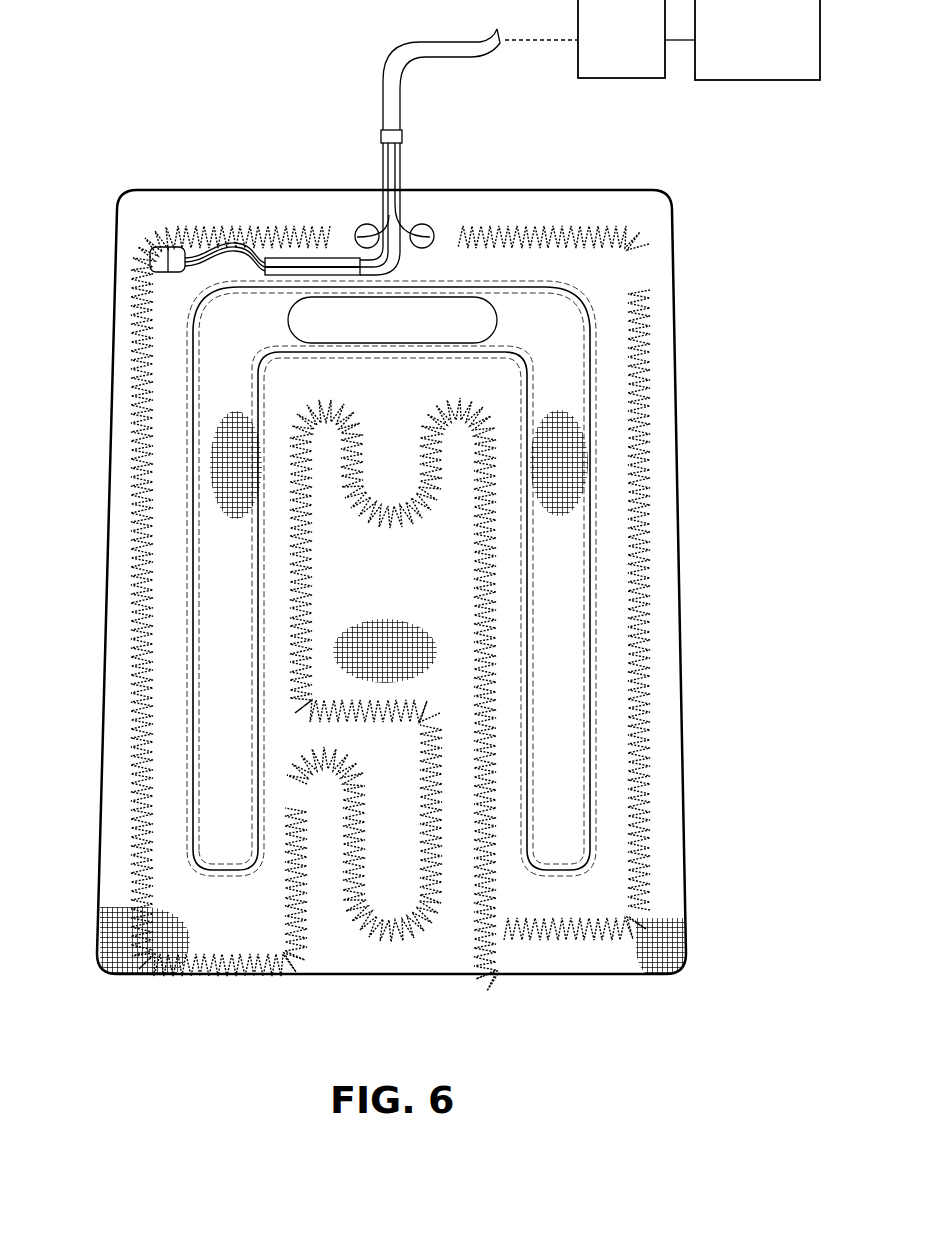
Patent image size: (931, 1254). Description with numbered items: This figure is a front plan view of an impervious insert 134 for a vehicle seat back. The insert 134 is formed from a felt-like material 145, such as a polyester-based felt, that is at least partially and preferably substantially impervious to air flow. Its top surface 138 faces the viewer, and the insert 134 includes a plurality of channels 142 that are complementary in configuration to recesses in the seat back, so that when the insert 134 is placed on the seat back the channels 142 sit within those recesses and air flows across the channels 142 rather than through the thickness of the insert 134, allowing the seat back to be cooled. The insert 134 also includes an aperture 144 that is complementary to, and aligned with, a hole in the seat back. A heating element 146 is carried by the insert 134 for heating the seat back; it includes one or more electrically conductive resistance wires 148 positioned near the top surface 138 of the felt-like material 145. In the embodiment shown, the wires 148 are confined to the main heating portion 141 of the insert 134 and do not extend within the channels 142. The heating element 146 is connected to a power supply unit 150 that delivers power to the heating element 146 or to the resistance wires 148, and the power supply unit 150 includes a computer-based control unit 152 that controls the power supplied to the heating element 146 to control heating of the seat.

The impervious insert 134 is at (684, 167).
The top surface 138 is at (123, 875).
The main heating portion 141 is at (322, 922).
The channels 142 is at (212, 572).
The aperture 144 is at (288, 322).
The felt-like material 145 is at (563, 897).
The heating element 146 is at (636, 293).
The electrically conductive resistance wires 148 is at (598, 226).
The power supply unit 150 is at (612, 78).
The computer-based control unit 152 is at (750, 80).